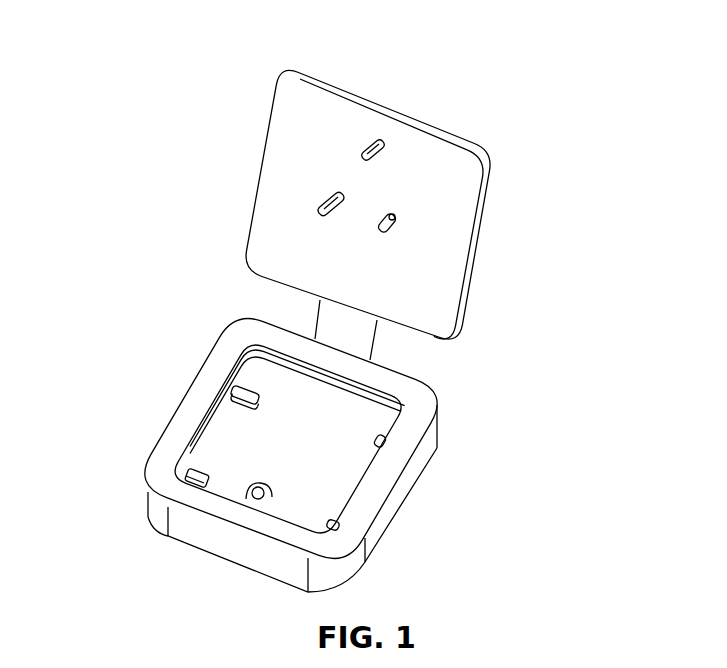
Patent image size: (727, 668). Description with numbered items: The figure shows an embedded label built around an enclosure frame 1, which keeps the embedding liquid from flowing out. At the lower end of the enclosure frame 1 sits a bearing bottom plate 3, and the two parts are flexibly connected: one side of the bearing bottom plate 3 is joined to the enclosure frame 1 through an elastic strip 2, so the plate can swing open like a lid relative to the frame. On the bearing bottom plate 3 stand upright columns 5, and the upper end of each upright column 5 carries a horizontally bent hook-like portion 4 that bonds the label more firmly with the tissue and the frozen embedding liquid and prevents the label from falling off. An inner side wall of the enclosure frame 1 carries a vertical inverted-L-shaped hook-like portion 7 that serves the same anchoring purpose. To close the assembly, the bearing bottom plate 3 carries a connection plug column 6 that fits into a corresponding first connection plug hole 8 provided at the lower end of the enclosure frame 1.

The enclosure frame 1 is at (410, 430).
The elastic strip 2 is at (350, 339).
The bearing bottom plate 3 is at (438, 232).
The hook-like portion 4 is at (390, 225).
The upright column 5 is at (397, 217).
The connection plug column 6 is at (380, 143).
The inverted-L-shaped hook-like portion 7 is at (232, 390).
The first connection plug hole 8 is at (252, 492).